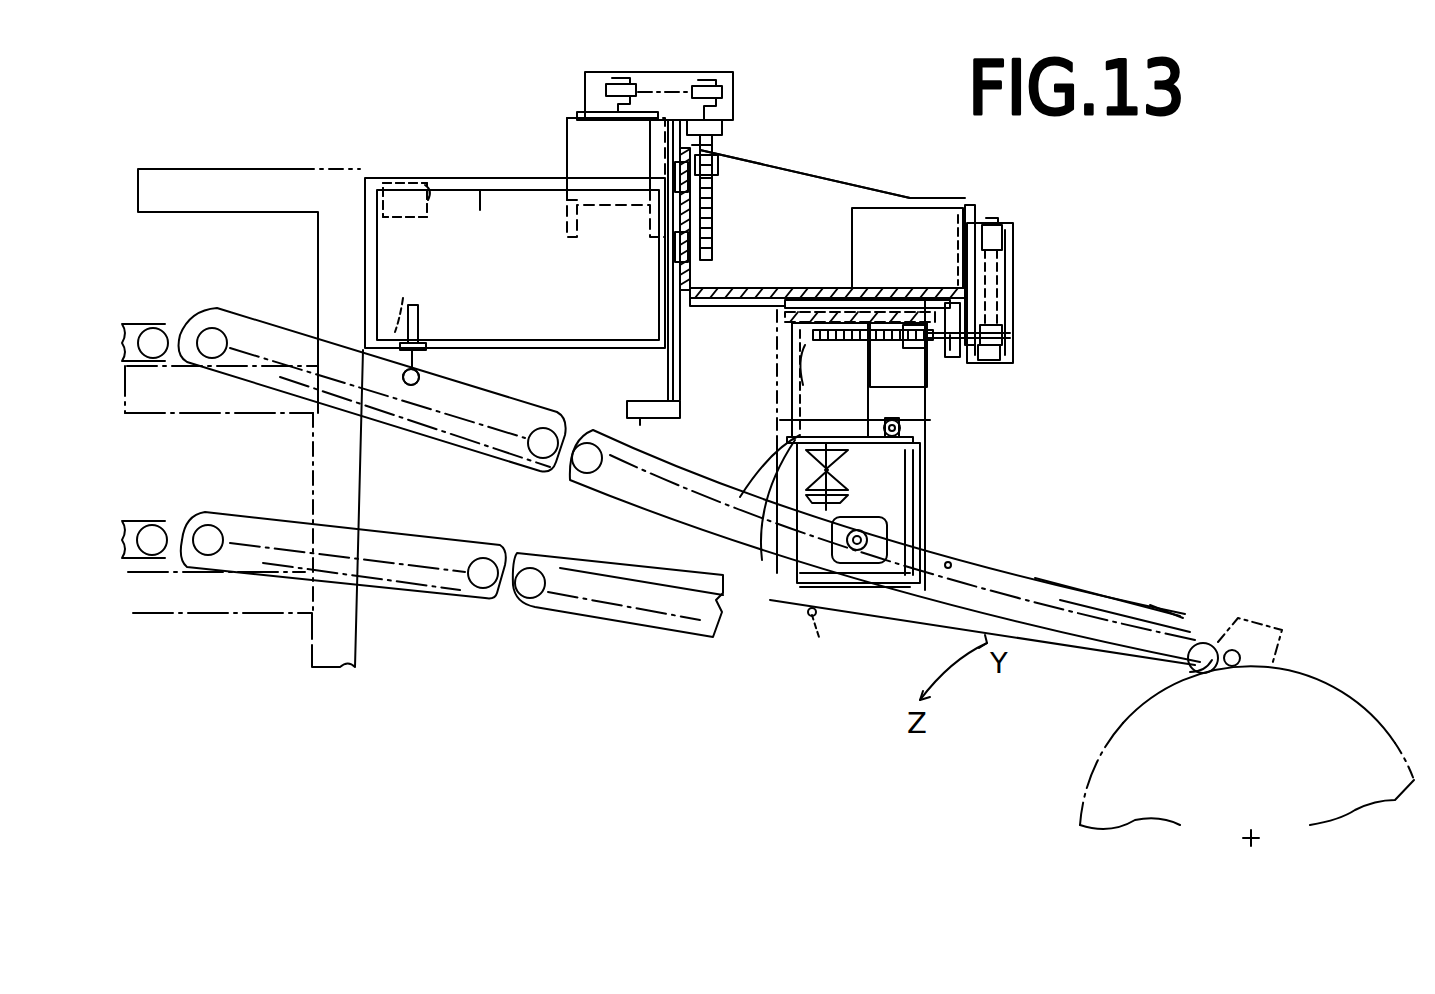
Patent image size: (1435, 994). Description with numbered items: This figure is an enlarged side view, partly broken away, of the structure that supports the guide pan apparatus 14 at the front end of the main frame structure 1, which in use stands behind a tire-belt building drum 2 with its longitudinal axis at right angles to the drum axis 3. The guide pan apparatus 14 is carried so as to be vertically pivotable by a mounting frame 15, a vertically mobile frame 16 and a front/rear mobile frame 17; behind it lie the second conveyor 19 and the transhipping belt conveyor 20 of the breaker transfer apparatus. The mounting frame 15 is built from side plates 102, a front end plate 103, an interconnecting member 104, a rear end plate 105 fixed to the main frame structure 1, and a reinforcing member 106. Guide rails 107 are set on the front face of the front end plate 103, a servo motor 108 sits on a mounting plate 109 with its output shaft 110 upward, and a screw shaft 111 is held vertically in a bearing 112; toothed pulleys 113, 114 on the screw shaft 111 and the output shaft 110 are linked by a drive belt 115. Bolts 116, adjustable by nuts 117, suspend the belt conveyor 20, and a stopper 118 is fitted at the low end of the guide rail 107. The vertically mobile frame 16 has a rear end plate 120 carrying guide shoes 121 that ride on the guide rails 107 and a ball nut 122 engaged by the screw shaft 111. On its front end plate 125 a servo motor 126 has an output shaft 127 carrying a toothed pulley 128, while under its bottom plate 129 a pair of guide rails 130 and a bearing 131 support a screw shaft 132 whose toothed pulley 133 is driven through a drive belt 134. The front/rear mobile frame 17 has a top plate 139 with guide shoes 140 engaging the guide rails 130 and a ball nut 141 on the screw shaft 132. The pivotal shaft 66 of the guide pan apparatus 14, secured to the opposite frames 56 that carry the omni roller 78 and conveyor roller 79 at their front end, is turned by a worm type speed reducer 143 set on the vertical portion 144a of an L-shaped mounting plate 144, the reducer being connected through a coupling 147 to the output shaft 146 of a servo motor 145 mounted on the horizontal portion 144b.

The main frame structure 1 is at (239, 185).
The chamber 2 is at (1362, 705).
The drum axis 3 is at (1253, 832).
The guide pan apparatus 14 is at (1103, 580).
The mounting frame 15 is at (483, 182).
The vertically mobile frame 16 is at (840, 172).
The front/rear mobile frame 17 is at (928, 415).
The second conveyor 19 is at (141, 330).
The transhipping belt conveyor 20 is at (487, 448).
The opposite frames 56 is at (1060, 570).
The pivotal shaft 66 is at (950, 568).
The omni roller 78 is at (1193, 672).
The conveyor roller 79 is at (1243, 640).
The side plates 102 is at (520, 200).
The front end plate 103 is at (680, 362).
The interconnecting member 104 is at (397, 170).
The rear end plate 105 is at (375, 178).
The guide 106 is at (425, 185).
The guide rails 107 is at (680, 392).
The servo motor 108 is at (580, 150).
The plate 109 is at (576, 112).
The output shaft 110 is at (603, 72).
The screw shaft 111 is at (712, 195).
The bearing 112 is at (712, 120).
The toothed pulley 113 is at (621, 78).
The toothed pulley 114 is at (720, 80).
The drive belt 115 is at (660, 78).
The bolts 116 is at (408, 386).
The nuts 117 is at (412, 350).
The stopper 118 is at (657, 420).
The rear end plate 120 is at (690, 272).
The guide shoes 121 is at (712, 150).
The ball nut 122 is at (720, 160).
The front end plate 125 is at (970, 222).
The servo motor 126 is at (920, 225).
The output shaft 127 is at (990, 225).
The toothed pulley 128 is at (1000, 225).
The bottom plate 129 is at (788, 296).
The guide rails 130 is at (733, 303).
The bearing 131 is at (950, 358).
The screw shaft 132 is at (1008, 338).
The toothed pulley 133 is at (1002, 330).
The drive belt 134 is at (1002, 305).
The top plate 139 is at (866, 357).
The guide shoes 140 is at (888, 305).
The ball nut 141 is at (905, 346).
The worm type speed reducer 143 is at (876, 590).
The L-shaped mounting plate 144 is at (915, 478).
The vertical portion 144a is at (915, 508).
The horizontal portion 144b is at (920, 445).
The servo motor 145 is at (800, 425).
The output shaft 146 is at (790, 472).
The coupling 147 is at (790, 548).